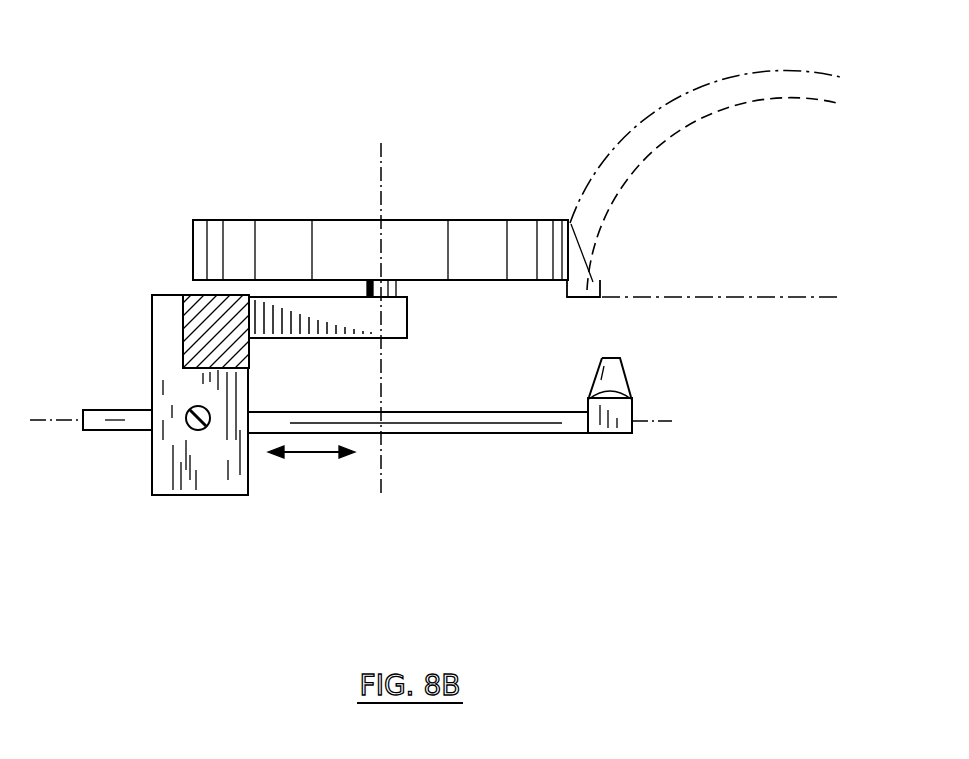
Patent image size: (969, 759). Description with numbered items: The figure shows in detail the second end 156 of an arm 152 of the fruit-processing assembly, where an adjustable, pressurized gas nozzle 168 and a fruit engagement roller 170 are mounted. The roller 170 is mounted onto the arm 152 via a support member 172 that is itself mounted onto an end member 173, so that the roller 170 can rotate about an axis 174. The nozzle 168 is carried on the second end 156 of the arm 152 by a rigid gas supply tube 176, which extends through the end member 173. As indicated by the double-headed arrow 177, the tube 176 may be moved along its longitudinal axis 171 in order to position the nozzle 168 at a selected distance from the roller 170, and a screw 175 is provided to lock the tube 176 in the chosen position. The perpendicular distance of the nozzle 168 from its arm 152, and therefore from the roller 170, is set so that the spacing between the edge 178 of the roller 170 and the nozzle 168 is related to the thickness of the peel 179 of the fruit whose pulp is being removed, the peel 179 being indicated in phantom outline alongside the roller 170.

The second end 156 is at (148, 167).
The fruit engagement roller 170 is at (290, 227).
The axis 174 is at (383, 179).
The edge 178 is at (578, 234).
The peel 179 is at (582, 290).
The arm 152 is at (190, 322).
The support member 172 is at (320, 320).
The end member 173 is at (220, 487).
The screw 175 is at (190, 426).
The rigid gas supply tube 176 is at (430, 434).
The longitudinal axis 171 is at (660, 423).
The double-headed arrow 177 is at (315, 450).
The pressurized gas nozzle 168 is at (625, 403).